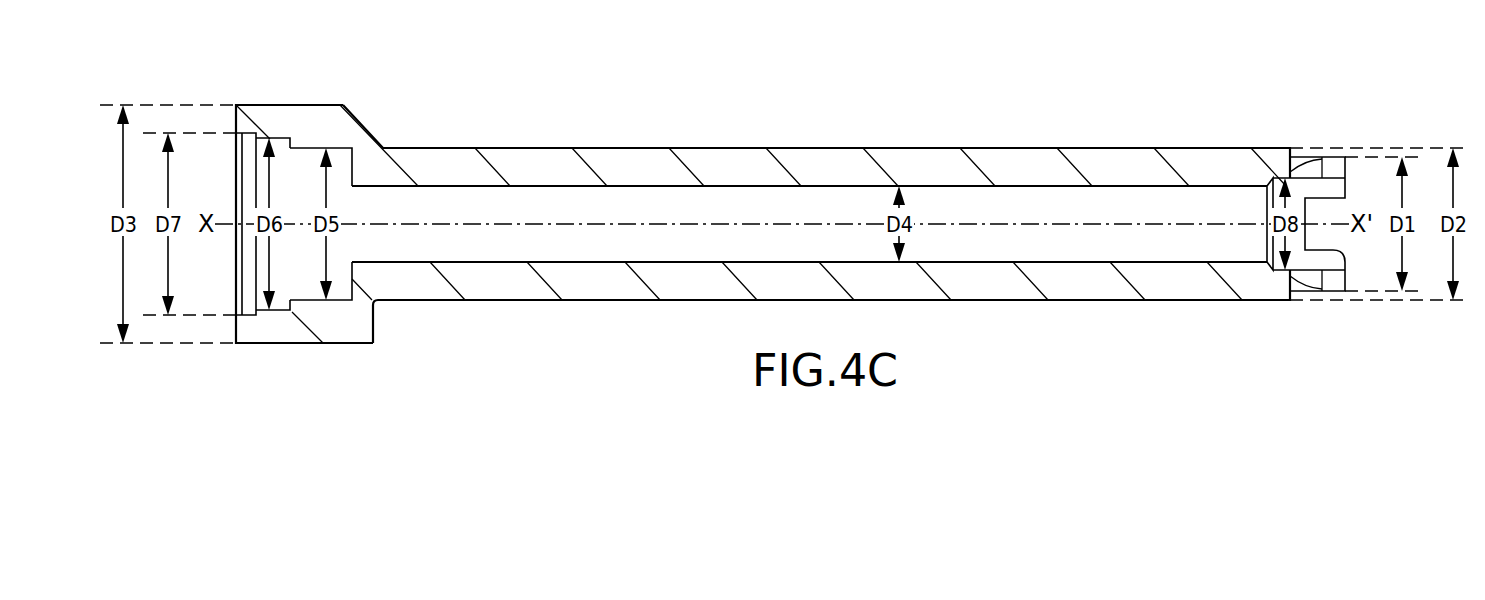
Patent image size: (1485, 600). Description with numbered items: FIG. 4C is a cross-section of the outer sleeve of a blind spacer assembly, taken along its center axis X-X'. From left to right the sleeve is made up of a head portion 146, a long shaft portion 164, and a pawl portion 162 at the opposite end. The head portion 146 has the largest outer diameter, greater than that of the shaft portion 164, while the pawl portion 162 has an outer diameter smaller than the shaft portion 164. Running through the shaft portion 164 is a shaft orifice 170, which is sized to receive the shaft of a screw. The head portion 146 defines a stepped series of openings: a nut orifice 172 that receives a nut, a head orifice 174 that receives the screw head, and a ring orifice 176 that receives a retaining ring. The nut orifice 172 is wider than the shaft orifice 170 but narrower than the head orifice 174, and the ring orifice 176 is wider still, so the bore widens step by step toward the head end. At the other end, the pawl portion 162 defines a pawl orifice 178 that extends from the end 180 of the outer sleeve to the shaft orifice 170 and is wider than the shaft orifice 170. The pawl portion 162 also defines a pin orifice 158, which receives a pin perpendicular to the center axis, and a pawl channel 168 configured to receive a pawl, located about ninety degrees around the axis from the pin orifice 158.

The head portion 146 is at (397, 65).
The shaft portion 164 is at (1280, 87).
The pawl portion 162 is at (1338, 87).
The pawl channel 168 is at (1326, 197).
The end 180 is at (1347, 170).
The shaft orifice 170 is at (596, 248).
The nut orifice 172 is at (340, 301).
The head orifice 174 is at (283, 306).
The ring orifice 176 is at (252, 320).
The pawl orifice 178 is at (1331, 264).
The pin orifice 158 is at (1305, 299).